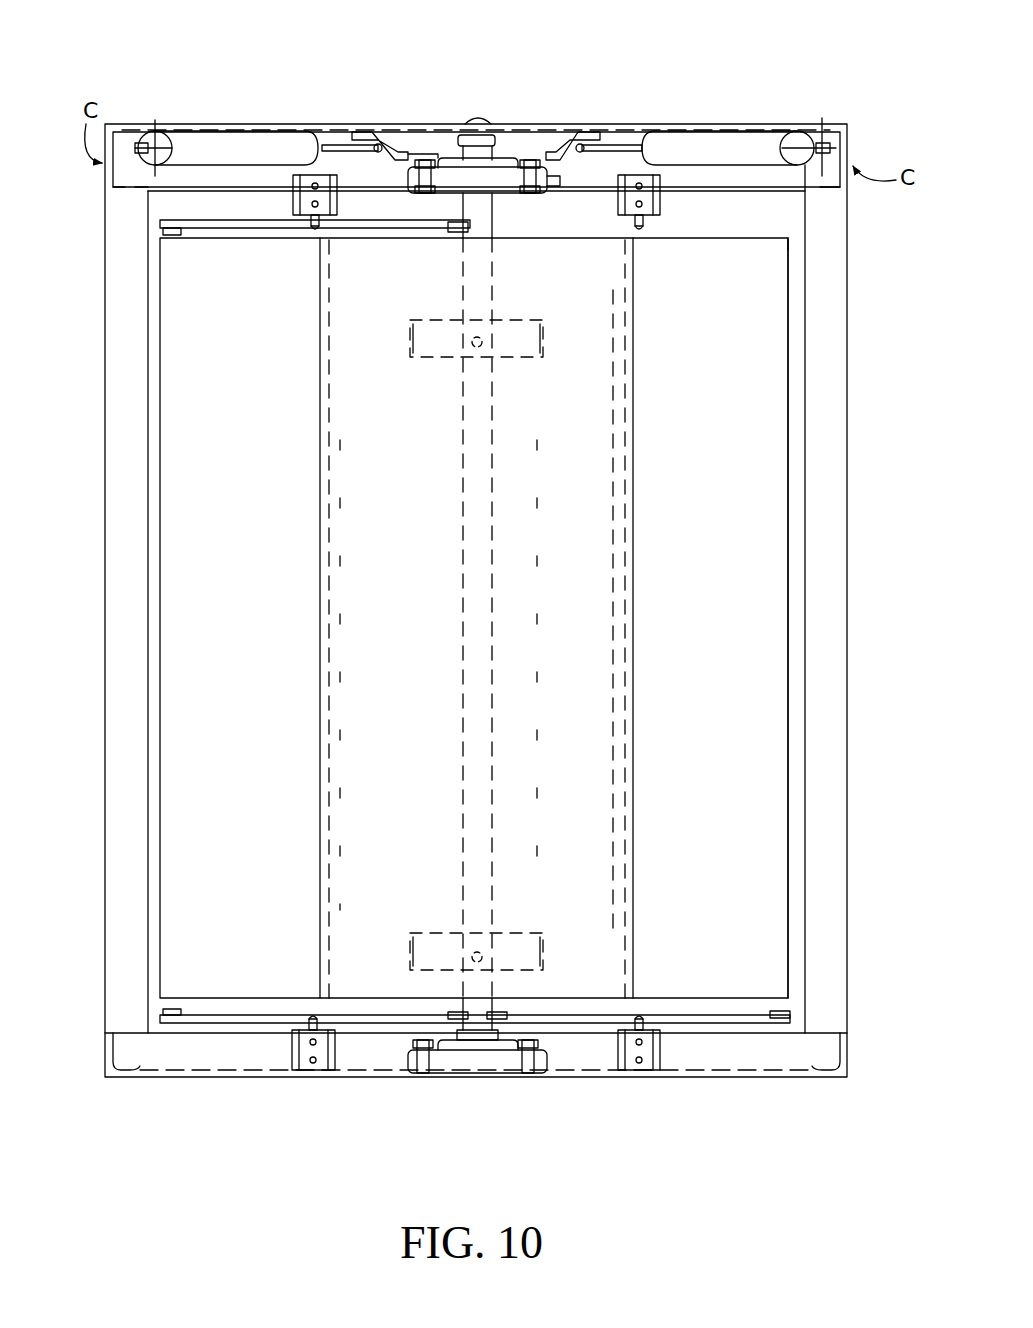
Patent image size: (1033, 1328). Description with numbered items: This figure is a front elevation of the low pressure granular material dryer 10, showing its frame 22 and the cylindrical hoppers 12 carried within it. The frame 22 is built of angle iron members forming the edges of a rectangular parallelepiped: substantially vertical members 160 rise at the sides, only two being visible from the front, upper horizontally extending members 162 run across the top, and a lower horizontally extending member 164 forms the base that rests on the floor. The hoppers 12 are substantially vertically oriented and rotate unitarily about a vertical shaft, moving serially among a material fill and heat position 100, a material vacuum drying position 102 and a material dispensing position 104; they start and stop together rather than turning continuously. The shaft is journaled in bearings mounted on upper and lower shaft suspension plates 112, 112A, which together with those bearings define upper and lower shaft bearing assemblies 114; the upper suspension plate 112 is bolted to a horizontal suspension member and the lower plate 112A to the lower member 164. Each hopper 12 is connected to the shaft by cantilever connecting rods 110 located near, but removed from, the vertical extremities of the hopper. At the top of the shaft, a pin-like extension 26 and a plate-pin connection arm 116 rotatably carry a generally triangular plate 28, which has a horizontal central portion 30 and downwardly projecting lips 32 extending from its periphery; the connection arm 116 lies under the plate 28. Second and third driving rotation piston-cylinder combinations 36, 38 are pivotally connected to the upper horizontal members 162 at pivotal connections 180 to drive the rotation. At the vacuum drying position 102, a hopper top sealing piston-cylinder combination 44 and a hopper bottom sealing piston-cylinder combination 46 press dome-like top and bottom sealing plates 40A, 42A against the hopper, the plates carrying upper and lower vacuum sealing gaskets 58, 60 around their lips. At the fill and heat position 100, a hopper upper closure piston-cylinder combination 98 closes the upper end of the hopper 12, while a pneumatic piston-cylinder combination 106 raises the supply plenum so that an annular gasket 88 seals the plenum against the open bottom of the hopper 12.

The low pressure granular material dryer 10 is at (692, 101).
The cylindrical hopper 12 is at (757, 422).
The frame 22 is at (480, 222).
The pin-like extension 26 is at (480, 133).
The generally triangular plate 28 is at (598, 134).
The horizontal central portion 30 is at (405, 140).
The downwardly projecting lips 32 is at (392, 130).
The second driving rotation piston-cylinder combination 36 is at (703, 148).
The third driving rotation piston-cylinder combination 38 is at (228, 140).
The upper cross bar 40A is at (258, 213).
The lower cross bar 42A is at (178, 1014).
The hopper top sealing piston-cylinder combination 44 is at (313, 128).
The hopper bottom sealing piston-cylinder combination 46 is at (310, 1052).
The upper vacuum sealing gasket 58 is at (172, 236).
The lower vacuum sealing gasket 60 is at (175, 1005).
The annular gasket 88 is at (470, 1070).
The hopper upper closure piston-cylinder combination 98 is at (789, 247).
The material fill and heat position 100 is at (720, 341).
The material vacuum drying position 102 is at (264, 447).
The material dispensing position 104 is at (432, 582).
The pneumatic piston-cylinder combination 106 is at (672, 1048).
The cantilever connecting rod 110 is at (408, 328).
The shaft suspension plate 112 is at (512, 157).
The lower mount 112A is at (513, 1060).
The shaft bearing assembly 114 is at (470, 122).
The plate-pin connection arm 116 is at (540, 176).
The substantially vertical member 160 is at (130, 826).
The upper horizontally extending member 162 is at (173, 127).
The lower horizontally extending member 164 is at (125, 1075).
The pivotal connection 180 is at (128, 128).